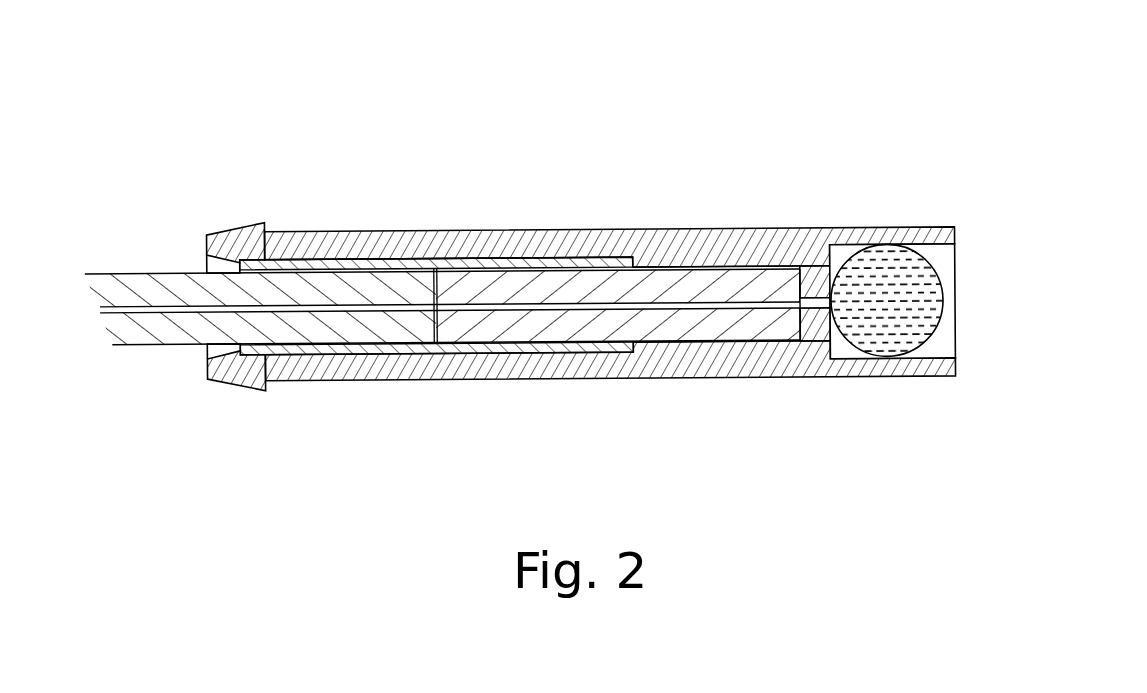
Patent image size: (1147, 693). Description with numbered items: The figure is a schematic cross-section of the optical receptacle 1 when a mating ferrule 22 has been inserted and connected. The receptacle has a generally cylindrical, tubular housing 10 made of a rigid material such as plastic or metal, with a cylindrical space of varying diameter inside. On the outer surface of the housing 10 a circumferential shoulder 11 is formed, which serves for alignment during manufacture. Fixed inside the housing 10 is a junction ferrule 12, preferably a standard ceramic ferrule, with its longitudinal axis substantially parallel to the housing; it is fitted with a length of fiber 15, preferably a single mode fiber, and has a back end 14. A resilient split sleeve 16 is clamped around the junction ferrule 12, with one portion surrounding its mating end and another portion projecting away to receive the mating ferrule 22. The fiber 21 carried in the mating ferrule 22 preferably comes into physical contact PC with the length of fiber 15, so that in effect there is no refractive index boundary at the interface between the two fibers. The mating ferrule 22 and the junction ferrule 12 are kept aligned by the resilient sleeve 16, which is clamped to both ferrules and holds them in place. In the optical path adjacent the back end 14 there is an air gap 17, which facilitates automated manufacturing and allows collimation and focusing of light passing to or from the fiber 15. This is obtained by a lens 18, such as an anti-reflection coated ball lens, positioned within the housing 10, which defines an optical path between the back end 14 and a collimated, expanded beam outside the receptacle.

The optical receptacle 1 is at (352, 156).
The housing 10 is at (685, 267).
The circumferential shoulder 11 is at (267, 382).
The junction ferrule 12 is at (512, 288).
The back end 14 is at (803, 314).
The length of fiber 15 is at (707, 293).
The resilient split sleeve 16 is at (373, 259).
The air gap 17 is at (828, 303).
The lens 18 is at (882, 267).
The fiber 21 is at (148, 311).
The mating ferrule 22 is at (217, 290).
The physical contact PC is at (432, 304).